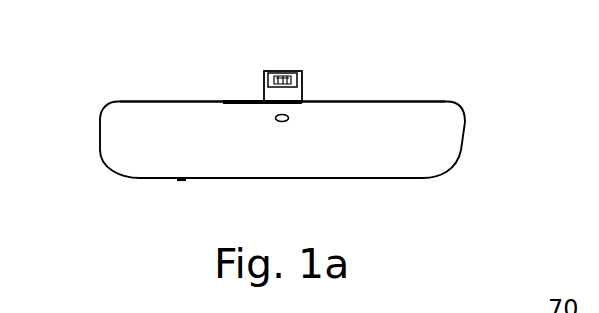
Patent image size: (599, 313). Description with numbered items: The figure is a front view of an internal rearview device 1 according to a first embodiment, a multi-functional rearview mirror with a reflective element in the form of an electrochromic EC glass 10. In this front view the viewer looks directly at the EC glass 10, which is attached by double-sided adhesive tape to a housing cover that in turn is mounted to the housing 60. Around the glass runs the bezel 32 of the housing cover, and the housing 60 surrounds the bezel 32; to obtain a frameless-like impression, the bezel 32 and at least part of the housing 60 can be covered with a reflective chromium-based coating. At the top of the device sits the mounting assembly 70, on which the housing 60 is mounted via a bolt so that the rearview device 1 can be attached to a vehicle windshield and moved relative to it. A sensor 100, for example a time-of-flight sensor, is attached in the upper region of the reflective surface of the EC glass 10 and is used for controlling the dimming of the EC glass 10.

The internal rearview device 1 is at (400, 182).
The EC glass 10 is at (130, 135).
The bezel 32 is at (176, 100).
The housing 60 is at (238, 100).
The mounting assembly 70 is at (272, 70).
The sensor 100 is at (282, 122).